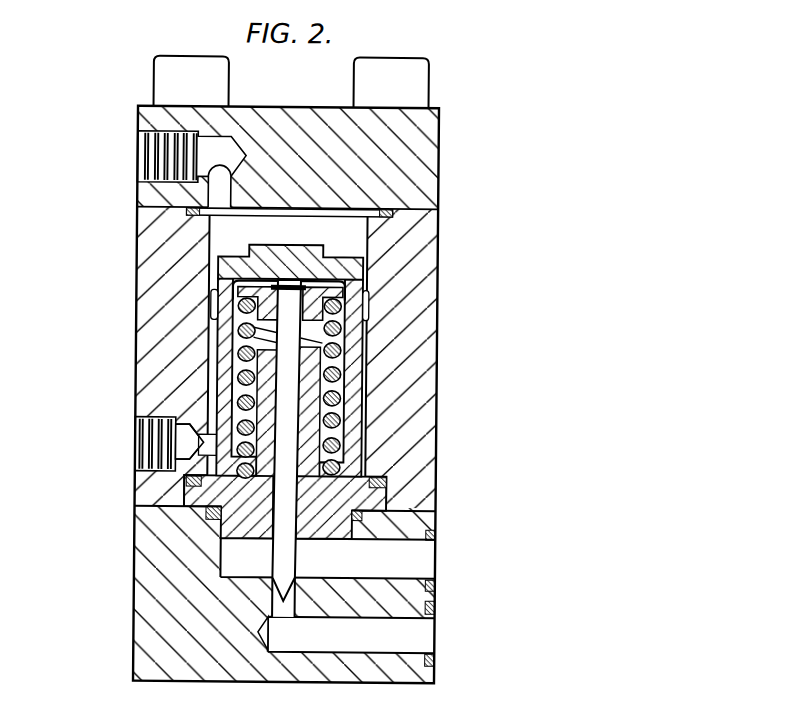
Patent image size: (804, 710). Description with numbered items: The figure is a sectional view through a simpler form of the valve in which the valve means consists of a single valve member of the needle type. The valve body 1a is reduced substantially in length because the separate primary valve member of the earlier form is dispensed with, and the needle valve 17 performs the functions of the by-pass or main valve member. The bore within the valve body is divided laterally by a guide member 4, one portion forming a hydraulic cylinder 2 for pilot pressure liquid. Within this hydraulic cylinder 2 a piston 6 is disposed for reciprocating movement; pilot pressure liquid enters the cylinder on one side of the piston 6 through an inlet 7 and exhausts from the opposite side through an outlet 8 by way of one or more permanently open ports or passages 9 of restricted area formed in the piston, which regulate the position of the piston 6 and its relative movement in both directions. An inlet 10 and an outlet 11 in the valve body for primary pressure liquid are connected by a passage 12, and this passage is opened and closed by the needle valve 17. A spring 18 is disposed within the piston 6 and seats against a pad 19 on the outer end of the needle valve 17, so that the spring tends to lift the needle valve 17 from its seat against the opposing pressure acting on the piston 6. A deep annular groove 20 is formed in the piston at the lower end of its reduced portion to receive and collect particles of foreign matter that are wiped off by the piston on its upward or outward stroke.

The valve body 1a is at (142, 604).
The hydraulic cylinder 2 is at (346, 236).
The guide member 4 is at (371, 497).
The piston 6 is at (355, 379).
The inlet 7 is at (150, 160).
The outlet 8 is at (150, 450).
The ports or passages 9 is at (226, 292).
The inlet 10 is at (399, 559).
The outlet 11 is at (410, 633).
The passage 12 is at (280, 605).
The needle valve 17 is at (290, 568).
The spring 18 is at (335, 348).
The pad 19 is at (342, 290).
The annular groove 20 is at (215, 321).